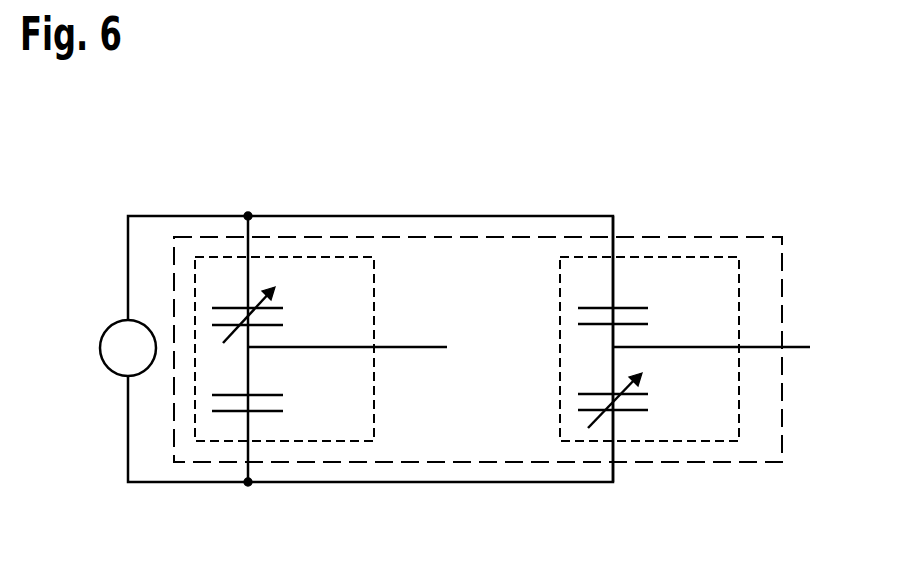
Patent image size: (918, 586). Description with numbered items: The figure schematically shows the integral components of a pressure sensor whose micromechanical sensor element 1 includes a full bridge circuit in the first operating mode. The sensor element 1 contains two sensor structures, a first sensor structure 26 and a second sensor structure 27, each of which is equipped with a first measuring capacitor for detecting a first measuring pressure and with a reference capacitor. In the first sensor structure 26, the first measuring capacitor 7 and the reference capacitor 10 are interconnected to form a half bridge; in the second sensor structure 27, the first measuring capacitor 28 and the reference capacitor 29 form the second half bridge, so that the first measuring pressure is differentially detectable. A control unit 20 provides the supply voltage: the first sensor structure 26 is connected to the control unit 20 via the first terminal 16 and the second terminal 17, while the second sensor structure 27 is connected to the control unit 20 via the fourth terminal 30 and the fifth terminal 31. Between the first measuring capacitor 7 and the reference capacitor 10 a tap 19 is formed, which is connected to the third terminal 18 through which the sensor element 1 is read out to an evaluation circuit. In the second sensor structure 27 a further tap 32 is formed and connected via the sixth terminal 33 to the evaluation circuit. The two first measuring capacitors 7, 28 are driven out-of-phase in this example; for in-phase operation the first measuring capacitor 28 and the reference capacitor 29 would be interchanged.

The micromechanical sensor element 1 is at (762, 237).
The first measuring capacitor 7 is at (283, 308).
The reference capacitor 10 is at (283, 411).
The first terminal 16 is at (244, 257).
The second terminal 17 is at (245, 441).
The third terminal 18 is at (374, 347).
The tap 19 is at (248, 347).
The control unit 20 is at (107, 328).
The first sensor structure 26 is at (333, 257).
The second sensor structure 27 is at (698, 257).
The first measuring capacitor 28 is at (648, 410).
The reference capacitor 29 is at (648, 306).
The fourth terminal 30 is at (613, 257).
The fifth terminal 31 is at (613, 442).
The further tap 32 is at (613, 347).
The sixth terminal 33 is at (740, 347).